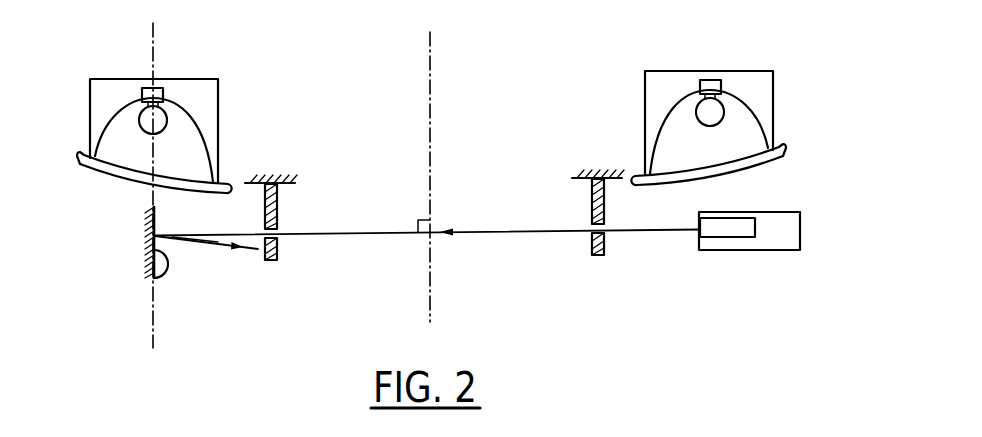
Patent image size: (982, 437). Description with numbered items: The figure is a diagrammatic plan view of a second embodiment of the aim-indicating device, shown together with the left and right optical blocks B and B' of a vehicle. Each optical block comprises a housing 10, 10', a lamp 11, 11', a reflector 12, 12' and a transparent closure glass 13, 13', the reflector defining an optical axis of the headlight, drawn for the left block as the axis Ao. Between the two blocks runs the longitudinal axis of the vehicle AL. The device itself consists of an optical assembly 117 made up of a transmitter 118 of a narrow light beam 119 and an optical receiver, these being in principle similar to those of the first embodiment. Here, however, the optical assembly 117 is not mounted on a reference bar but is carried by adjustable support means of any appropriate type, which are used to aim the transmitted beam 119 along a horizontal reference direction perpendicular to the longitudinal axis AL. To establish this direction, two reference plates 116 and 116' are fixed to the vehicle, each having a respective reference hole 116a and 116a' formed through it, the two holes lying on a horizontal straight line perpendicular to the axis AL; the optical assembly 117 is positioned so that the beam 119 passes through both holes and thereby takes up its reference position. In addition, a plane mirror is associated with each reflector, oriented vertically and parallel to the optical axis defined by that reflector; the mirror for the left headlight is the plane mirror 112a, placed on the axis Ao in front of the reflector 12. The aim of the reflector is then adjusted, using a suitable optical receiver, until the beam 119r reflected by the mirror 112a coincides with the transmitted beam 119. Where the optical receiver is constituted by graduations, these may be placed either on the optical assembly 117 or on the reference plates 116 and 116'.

The left optical block B is at (70, 32).
The right optical block B' is at (795, 33).
The housing 10 is at (154, 101).
The housing 10' is at (709, 92).
The lamp 11 is at (201, 111).
The lamp 11' is at (762, 102).
The reflector 12 is at (121, 129).
The reflector 12' is at (676, 124).
The transparent closure glass 13 is at (133, 179).
The transparent closure glass 13' is at (737, 164).
The optical axis of headlamp Ao is at (156, 330).
The longitudinal axis of the vehicle AL is at (430, 50).
The plane mirror 112a is at (160, 273).
The reference plate 116 is at (304, 200).
The reference hole 116a is at (311, 270).
The reference plate 116' is at (555, 192).
The reference hole 116a' is at (566, 267).
The optical assembly 117 is at (773, 252).
The transmitter 118 is at (722, 228).
The light beam 119 is at (393, 231).
The reflected beam 119r is at (218, 242).